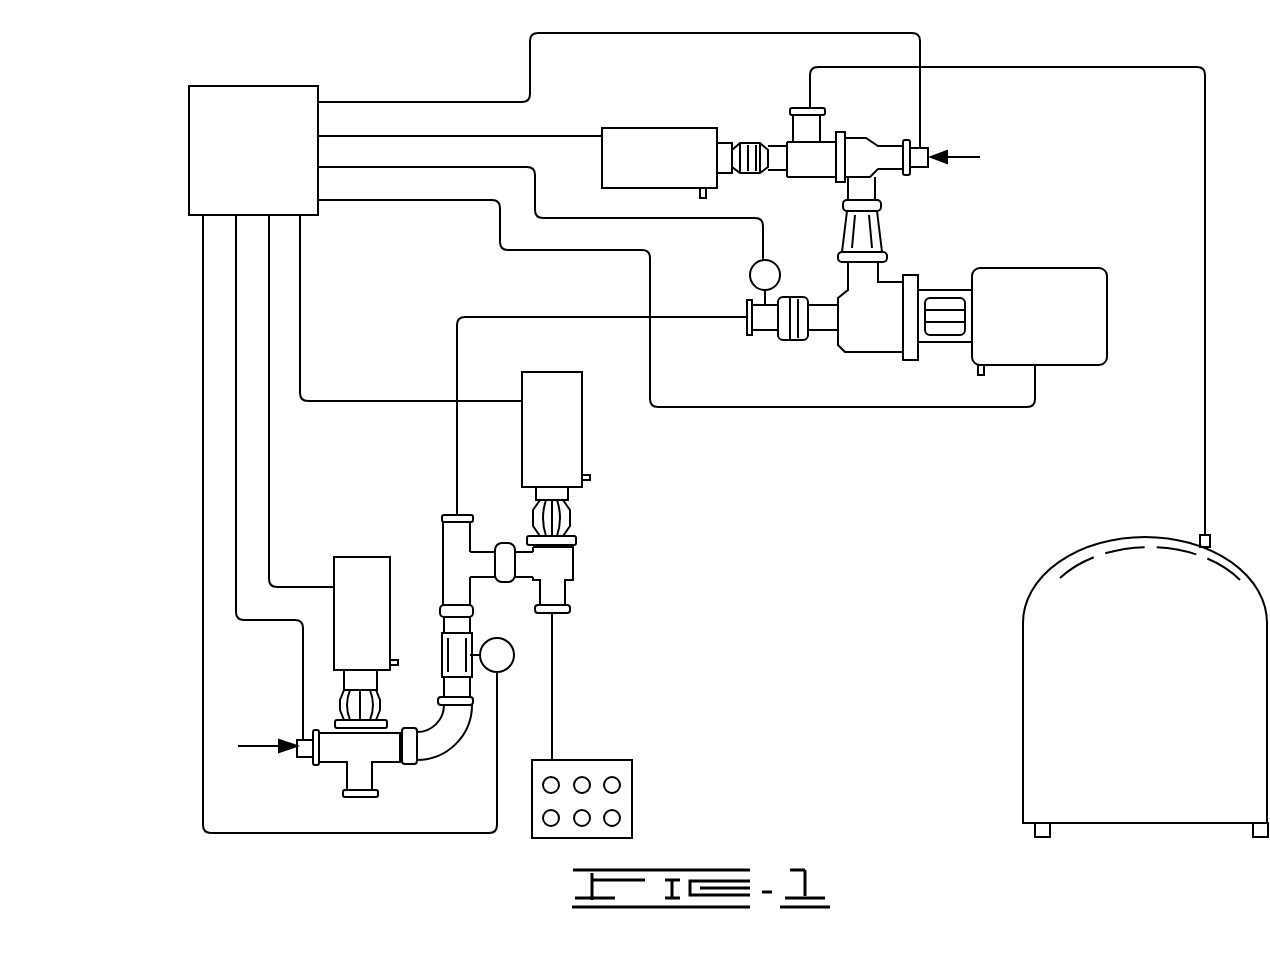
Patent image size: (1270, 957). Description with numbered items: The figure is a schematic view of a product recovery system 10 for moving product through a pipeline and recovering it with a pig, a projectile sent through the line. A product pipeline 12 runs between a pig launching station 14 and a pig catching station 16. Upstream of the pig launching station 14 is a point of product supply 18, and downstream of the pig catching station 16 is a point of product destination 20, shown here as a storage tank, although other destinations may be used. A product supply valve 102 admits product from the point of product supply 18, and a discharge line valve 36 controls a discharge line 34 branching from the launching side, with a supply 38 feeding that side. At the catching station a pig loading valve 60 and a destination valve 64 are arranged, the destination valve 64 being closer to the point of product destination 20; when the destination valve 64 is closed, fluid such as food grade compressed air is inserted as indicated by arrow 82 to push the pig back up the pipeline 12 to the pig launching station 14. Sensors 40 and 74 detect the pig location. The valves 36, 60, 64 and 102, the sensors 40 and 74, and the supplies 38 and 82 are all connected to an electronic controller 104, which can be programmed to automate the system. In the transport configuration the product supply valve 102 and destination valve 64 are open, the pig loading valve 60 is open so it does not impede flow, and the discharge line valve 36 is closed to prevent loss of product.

The product recovery system 10 is at (409, 84).
The electronic controller 104 is at (262, 86).
The destination valve 64 is at (642, 128).
The fluid supply (arrow) 82 is at (962, 156).
The sensor 74 is at (770, 259).
The pig catching station 16 is at (874, 352).
The pig loading valve 60 is at (1050, 268).
The product pipeline 12 is at (563, 313).
The product supply valve 102 is at (582, 447).
The pig launching station 14 is at (443, 753).
The discharge line 34 is at (343, 778).
The supply 38 is at (258, 744).
The discharge line valve 36 is at (350, 557).
The sensor 40 is at (504, 678).
The point of product supply 18 is at (603, 760).
The point of product destination 20 is at (1107, 545).